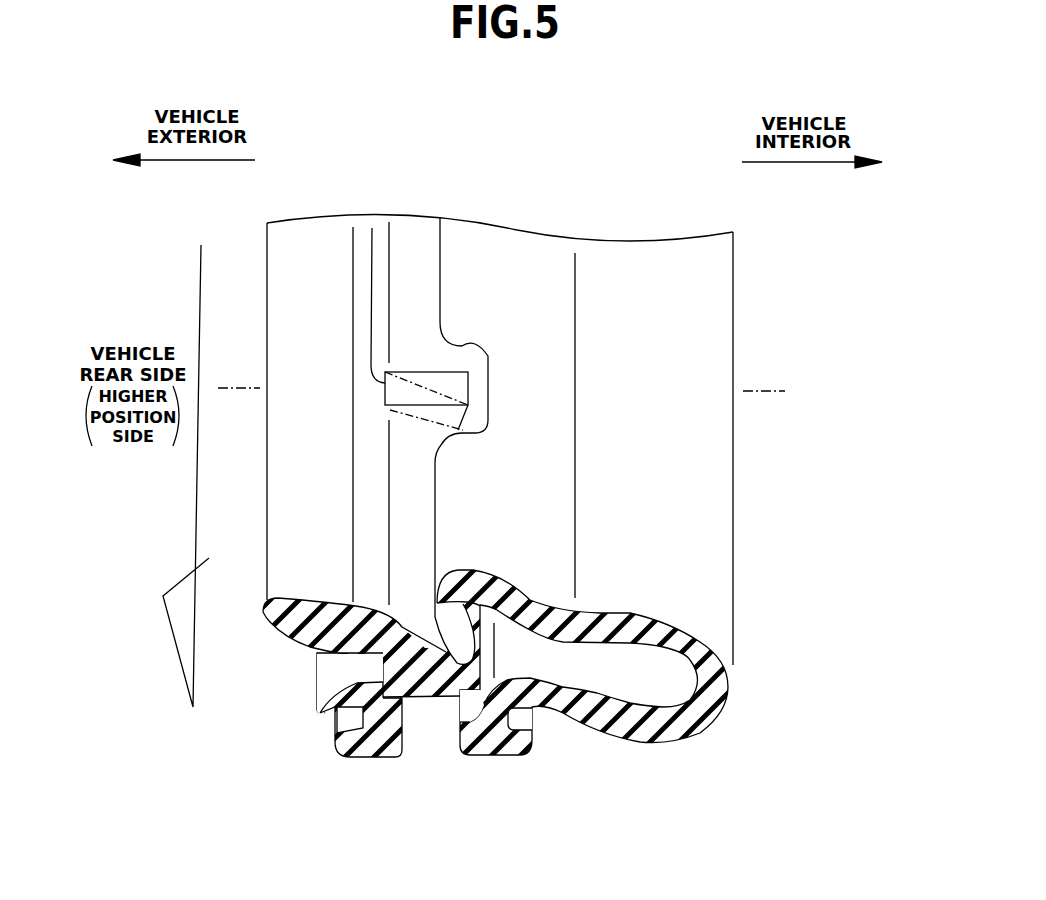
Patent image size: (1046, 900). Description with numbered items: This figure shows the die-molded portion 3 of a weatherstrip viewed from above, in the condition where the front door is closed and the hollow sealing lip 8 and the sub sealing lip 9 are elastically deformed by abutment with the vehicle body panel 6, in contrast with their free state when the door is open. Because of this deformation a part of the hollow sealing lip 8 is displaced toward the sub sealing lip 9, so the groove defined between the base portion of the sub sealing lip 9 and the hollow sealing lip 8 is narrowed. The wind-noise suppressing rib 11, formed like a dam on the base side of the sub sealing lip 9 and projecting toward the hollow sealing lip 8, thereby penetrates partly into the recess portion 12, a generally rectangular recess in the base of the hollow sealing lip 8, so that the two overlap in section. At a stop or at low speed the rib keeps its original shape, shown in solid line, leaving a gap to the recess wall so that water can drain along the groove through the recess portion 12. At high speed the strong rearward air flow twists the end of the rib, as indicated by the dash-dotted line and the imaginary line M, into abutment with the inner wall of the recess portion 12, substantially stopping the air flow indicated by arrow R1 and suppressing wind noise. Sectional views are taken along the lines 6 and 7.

The die-molded portion 3 is at (750, 297).
The vehicle body panel 6 is at (232, 397).
The section line 7- 7 is at (380, 747).
The hollow sealing lip 8 is at (705, 572).
The sub sealing lip 9 is at (283, 623).
The wind-noise suppressing rib 11 is at (372, 228).
The recess portion 12 is at (490, 367).
The arrow R1 is at (427, 283).
The imaginary line M is at (463, 430).